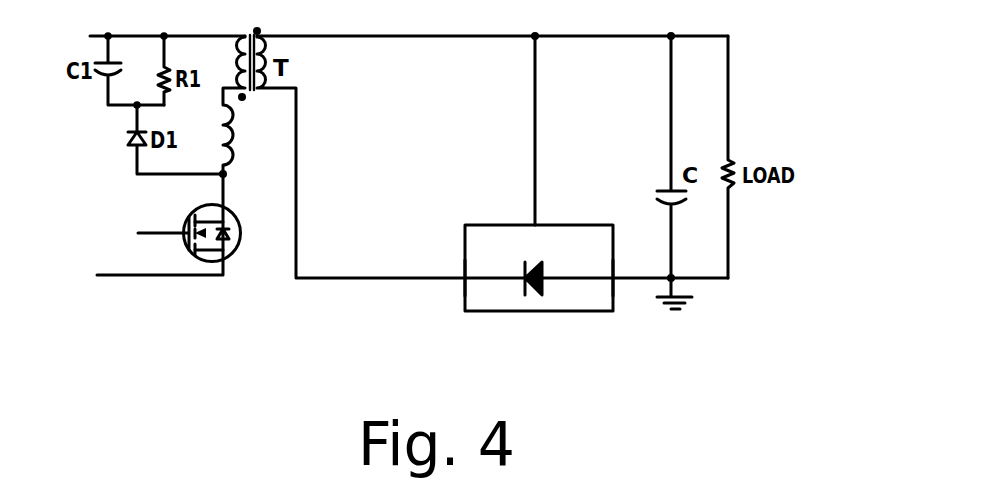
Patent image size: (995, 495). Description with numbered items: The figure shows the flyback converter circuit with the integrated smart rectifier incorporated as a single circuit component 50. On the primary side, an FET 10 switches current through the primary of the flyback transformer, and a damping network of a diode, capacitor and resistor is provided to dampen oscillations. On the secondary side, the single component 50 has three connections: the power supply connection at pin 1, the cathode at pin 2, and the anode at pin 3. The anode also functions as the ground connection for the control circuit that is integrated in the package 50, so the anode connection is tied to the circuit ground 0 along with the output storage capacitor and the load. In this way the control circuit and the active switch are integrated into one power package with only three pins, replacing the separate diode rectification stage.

The FET 10 is at (234, 256).
The single component 50 is at (587, 173).
The IC pin 1 (VCC) 1 is at (525, 130).
The IC pin 2 (K, cathode) 2 is at (455, 276).
The IC pin 3 (A/GND) 3 is at (623, 275).
The ground reference 0 is at (681, 304).